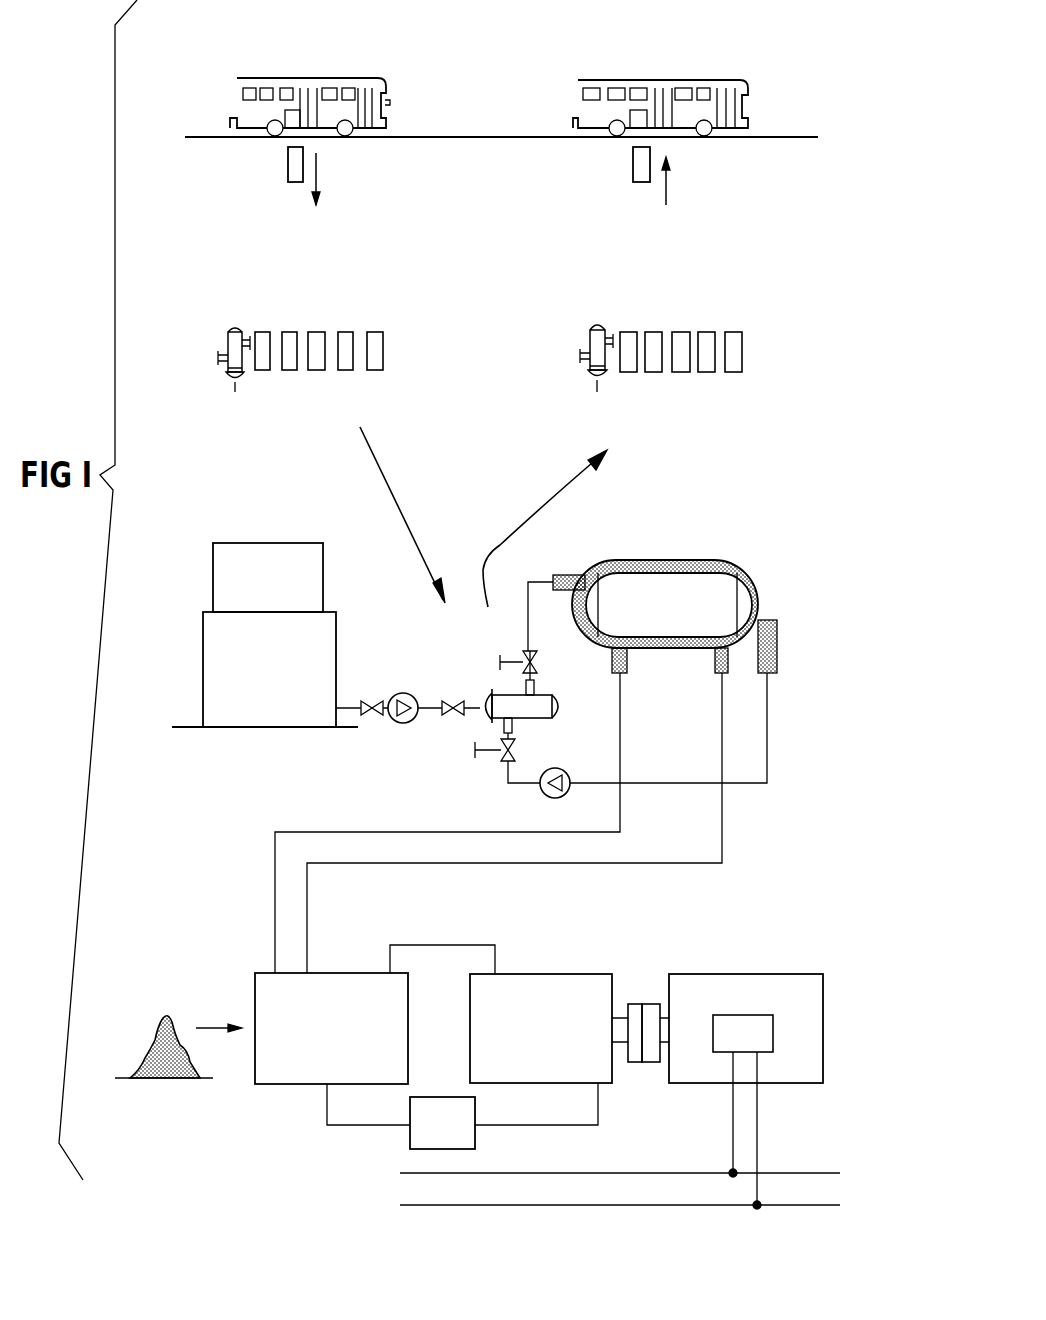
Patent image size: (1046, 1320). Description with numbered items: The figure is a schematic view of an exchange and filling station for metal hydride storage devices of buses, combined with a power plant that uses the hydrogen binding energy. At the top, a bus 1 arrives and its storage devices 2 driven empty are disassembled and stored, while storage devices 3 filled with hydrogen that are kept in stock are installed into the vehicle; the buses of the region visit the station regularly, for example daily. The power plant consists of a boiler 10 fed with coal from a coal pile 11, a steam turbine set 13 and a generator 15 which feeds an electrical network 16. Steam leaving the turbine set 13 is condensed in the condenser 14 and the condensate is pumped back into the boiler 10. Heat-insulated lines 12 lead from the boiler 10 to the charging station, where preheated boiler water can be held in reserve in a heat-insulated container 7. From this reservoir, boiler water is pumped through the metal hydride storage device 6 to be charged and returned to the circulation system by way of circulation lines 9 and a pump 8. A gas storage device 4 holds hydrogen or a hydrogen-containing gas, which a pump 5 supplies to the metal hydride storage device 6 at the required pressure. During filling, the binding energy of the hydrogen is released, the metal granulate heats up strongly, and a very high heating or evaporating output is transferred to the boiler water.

The bus 1 is at (346, 78).
The storage devices driven empty 2 is at (288, 160).
The storage devices filled with hydrogen 3 is at (633, 160).
The gas storage device 4 is at (227, 543).
The pump 5 is at (403, 724).
The metal hydride storage device 6 is at (505, 694).
The heat-insulated container 7 is at (672, 560).
The pump 8 is at (560, 770).
The circulation lines 9 is at (528, 612).
The boiler 10 is at (328, 973).
The coal pile 11 is at (170, 1015).
The heat-insulated lines 12 is at (432, 845).
The steam turbine set 13 is at (565, 974).
The condenser 14 is at (425, 1097).
The generator 15 is at (765, 974).
The electrical network 16 is at (644, 1186).